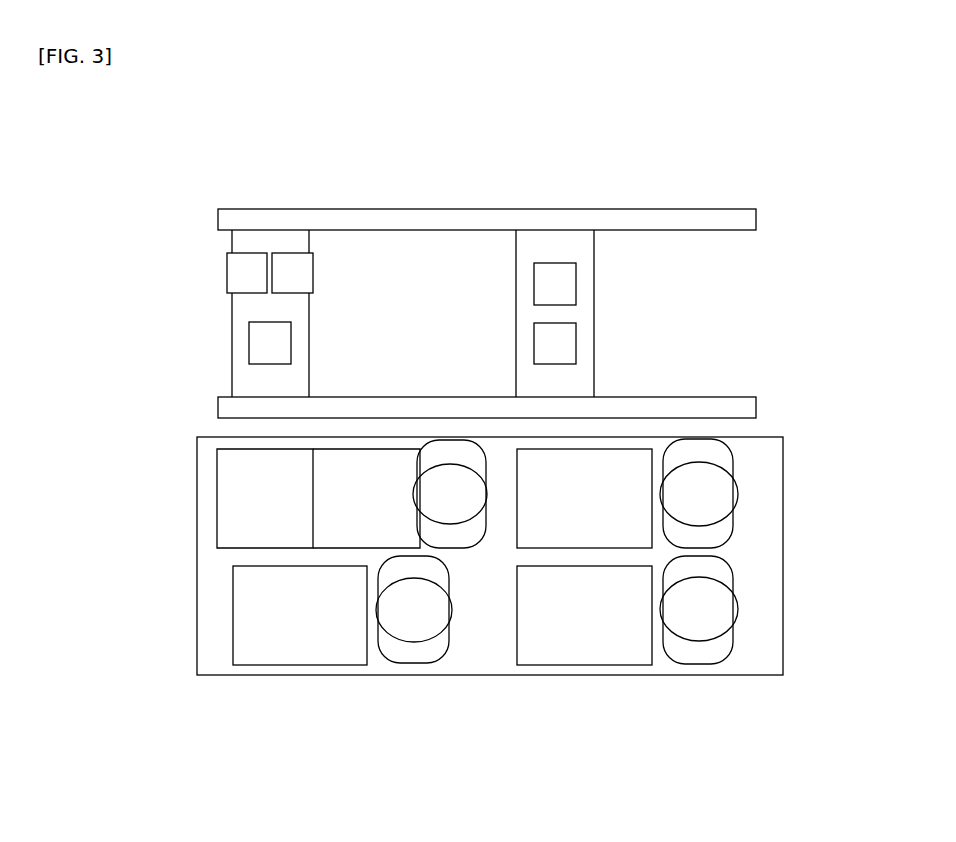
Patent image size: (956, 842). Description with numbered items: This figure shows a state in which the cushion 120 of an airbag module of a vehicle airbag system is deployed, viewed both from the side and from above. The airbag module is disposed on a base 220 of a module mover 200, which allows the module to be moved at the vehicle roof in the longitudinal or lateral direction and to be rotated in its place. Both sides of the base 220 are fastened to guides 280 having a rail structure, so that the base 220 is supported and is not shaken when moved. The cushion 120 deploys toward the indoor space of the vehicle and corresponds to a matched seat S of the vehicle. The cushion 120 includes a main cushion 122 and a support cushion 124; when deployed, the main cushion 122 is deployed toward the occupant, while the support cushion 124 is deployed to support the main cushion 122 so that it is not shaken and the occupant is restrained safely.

The module mover 200 is at (452, 416).
The guide 280 is at (228, 222).
The base 220 is at (247, 309).
The cushion 120 is at (237, 324).
The main cushion 122 is at (290, 267).
The support cushion 124 is at (253, 267).
The seat S is at (474, 557).